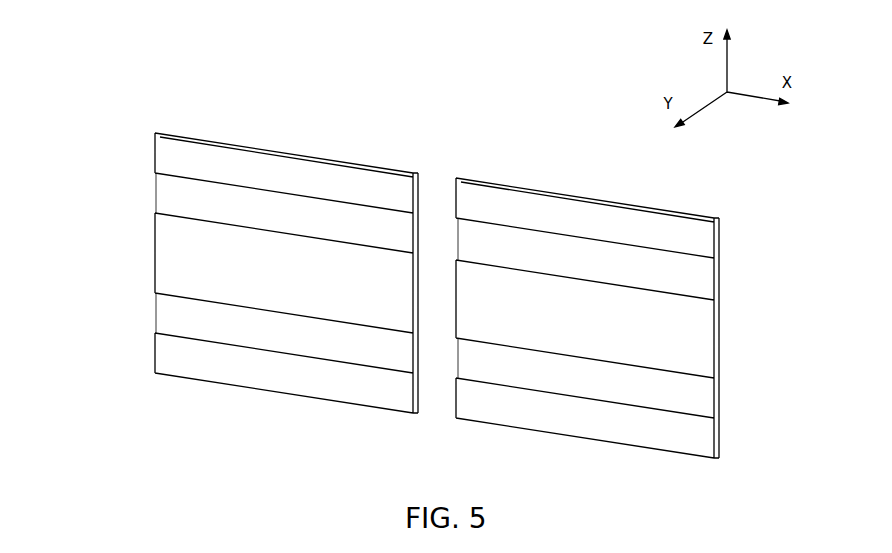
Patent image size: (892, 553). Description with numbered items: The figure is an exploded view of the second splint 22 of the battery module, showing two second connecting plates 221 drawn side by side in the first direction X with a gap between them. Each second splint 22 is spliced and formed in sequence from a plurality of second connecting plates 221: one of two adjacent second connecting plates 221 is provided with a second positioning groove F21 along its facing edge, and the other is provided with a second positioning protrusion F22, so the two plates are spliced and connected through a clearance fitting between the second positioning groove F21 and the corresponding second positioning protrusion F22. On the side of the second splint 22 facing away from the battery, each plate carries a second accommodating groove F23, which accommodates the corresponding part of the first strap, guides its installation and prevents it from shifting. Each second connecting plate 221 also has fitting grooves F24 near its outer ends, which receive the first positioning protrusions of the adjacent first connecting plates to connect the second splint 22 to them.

The second splint 22 is at (437, 236).
The second connecting plate 221 is at (437, 295).
The second positioning groove F21 is at (415, 191).
The second positioning protrusion F22 is at (451, 200).
The second accommodating groove F23 is at (233, 198).
The fitting groove F24 is at (152, 153).